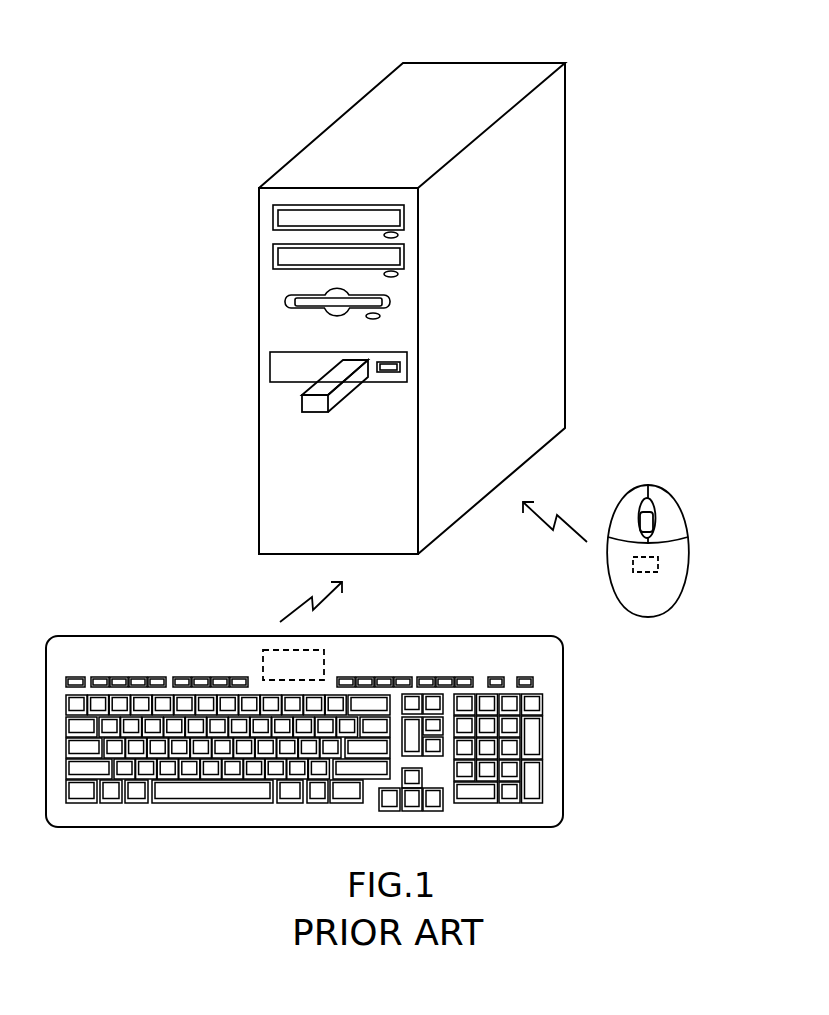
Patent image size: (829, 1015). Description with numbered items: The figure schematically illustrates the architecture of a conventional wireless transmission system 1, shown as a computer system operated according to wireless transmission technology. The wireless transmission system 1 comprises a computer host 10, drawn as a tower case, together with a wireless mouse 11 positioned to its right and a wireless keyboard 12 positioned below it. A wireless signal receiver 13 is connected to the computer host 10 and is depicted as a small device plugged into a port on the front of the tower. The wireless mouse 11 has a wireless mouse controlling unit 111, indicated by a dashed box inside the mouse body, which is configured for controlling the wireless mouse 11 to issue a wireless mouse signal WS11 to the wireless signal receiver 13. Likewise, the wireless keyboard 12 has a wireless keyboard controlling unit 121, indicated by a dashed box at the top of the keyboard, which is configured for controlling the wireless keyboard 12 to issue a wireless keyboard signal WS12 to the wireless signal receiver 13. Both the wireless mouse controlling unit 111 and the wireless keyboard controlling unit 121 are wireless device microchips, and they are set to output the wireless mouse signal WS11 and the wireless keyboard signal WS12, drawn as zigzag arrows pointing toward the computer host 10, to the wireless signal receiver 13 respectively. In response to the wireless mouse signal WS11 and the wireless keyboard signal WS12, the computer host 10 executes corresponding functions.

The wireless transmission system 1 is at (606, 23).
The computer host 10 is at (350, 128).
The wireless mouse 11 is at (661, 487).
The wireless mouse controlling unit 111 is at (650, 558).
The wireless keyboard 12 is at (162, 648).
The wireless keyboard controlling unit 121 is at (304, 663).
The wireless signal receiver 13 is at (323, 387).
The wireless mouse signal WS11 is at (560, 514).
The wireless keyboard signal WS12 is at (291, 599).